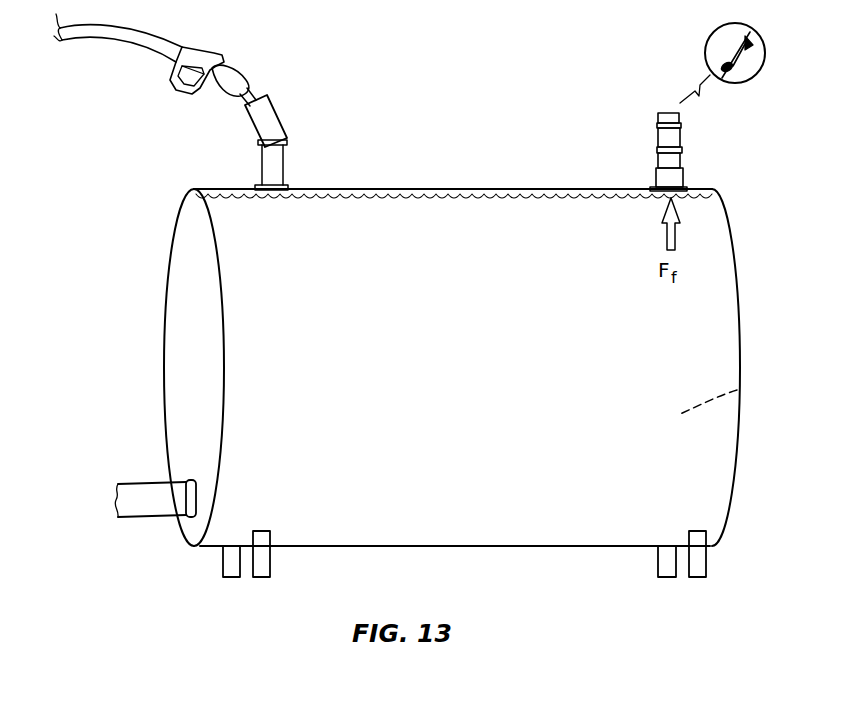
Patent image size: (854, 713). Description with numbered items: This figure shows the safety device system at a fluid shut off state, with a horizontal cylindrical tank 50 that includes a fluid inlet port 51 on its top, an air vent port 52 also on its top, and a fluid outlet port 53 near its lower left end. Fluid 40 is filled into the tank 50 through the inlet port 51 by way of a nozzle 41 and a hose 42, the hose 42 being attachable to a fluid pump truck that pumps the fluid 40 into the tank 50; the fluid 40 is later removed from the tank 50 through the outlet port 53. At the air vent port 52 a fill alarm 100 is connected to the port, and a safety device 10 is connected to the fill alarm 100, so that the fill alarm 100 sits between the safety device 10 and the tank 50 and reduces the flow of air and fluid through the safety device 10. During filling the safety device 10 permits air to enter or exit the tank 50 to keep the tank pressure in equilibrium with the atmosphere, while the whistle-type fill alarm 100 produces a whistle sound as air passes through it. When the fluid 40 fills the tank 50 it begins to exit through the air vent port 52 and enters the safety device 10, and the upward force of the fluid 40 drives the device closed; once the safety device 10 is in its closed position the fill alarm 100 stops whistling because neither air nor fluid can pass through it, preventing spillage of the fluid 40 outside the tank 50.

The safety device 10 is at (682, 135).
The fill alarm 100 is at (683, 173).
The fluid 40 is at (737, 390).
The nozzle 41 is at (227, 77).
The hose 42 is at (108, 38).
The tank 50 is at (738, 310).
The fluid inlet port 51 is at (290, 185).
The air vent port 52 is at (684, 186).
The fluid outlet port 53 is at (198, 490).